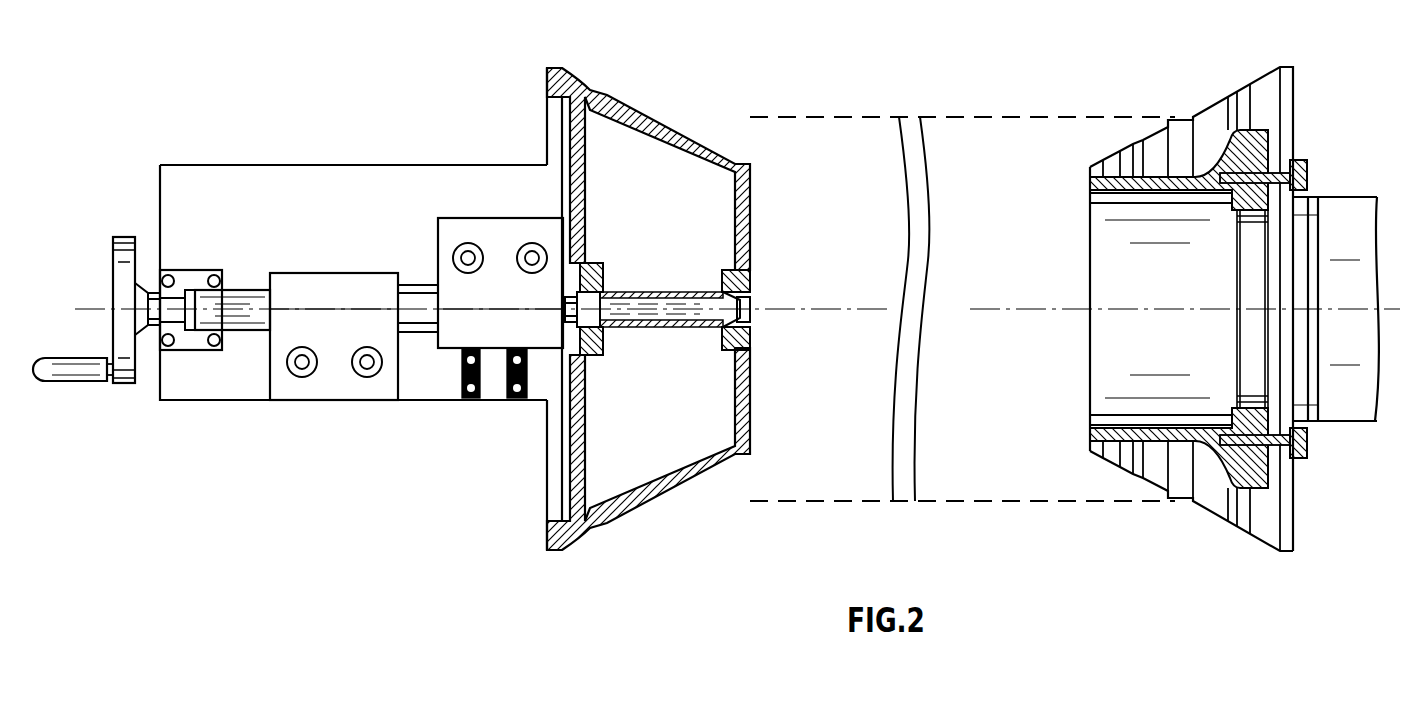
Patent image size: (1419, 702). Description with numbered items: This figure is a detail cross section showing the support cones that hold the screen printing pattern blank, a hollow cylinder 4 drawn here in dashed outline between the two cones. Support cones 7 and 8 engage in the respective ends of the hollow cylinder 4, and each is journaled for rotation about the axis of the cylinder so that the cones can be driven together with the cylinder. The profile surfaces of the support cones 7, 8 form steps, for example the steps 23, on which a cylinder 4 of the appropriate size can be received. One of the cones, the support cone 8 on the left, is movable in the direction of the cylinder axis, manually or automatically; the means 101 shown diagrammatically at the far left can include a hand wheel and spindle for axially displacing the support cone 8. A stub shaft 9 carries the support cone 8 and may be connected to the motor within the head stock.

The means for axially displacing the support cone 101 is at (257, 313).
The support cone 8 is at (629, 105).
The stub shaft 9 is at (674, 290).
The steps 23 is at (655, 505).
The hollow cylinder 4 is at (988, 115).
The support cone 7 is at (1180, 127).